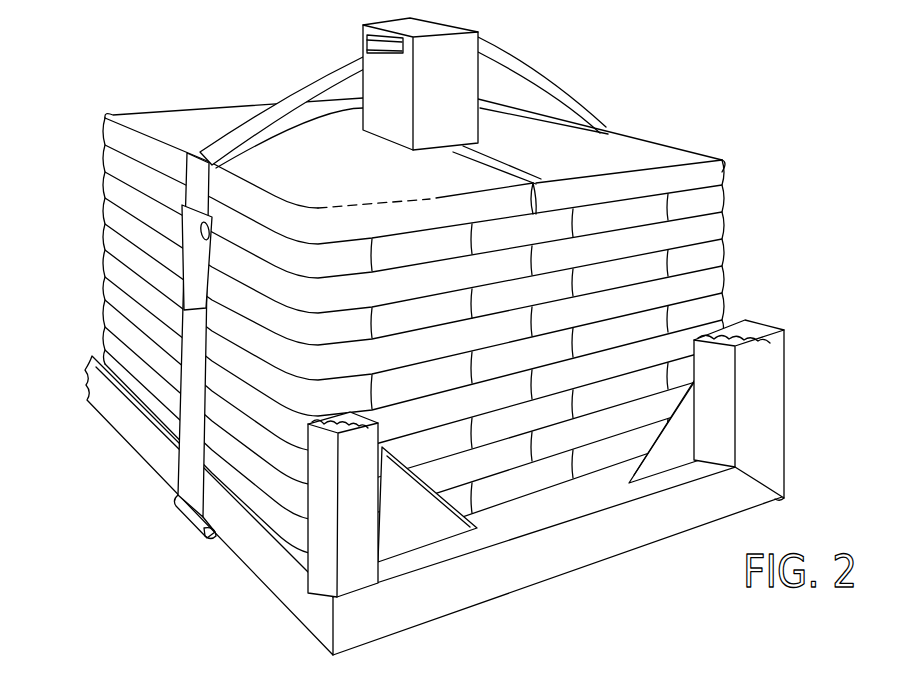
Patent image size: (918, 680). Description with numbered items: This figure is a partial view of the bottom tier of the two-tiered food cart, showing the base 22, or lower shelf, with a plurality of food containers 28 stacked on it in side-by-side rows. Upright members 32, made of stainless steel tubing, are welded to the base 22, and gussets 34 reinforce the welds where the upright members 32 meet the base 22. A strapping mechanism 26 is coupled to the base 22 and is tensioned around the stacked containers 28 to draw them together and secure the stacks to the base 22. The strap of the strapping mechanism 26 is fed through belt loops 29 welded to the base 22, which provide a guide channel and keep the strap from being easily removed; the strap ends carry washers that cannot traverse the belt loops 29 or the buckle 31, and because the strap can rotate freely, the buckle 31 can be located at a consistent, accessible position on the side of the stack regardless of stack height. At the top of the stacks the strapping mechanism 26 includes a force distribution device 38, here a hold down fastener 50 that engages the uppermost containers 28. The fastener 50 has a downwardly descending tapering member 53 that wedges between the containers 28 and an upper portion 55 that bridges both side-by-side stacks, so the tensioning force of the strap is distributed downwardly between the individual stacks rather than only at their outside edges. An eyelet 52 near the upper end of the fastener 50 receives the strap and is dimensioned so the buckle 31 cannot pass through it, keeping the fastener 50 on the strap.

The base 22 is at (527, 516).
The strapping mechanism 26 is at (341, 276).
The food containers 28 is at (712, 203).
The belt loops 29 is at (207, 539).
The buckle 31 is at (190, 262).
The upright members 32 is at (767, 377).
The gussets 34 is at (699, 415).
The force distribution device 38 is at (480, 78).
The hold down fastener 50 is at (466, 43).
The eyelet 52 is at (306, 80).
The tapering member 53 is at (455, 152).
The upper portion 55 is at (464, 137).